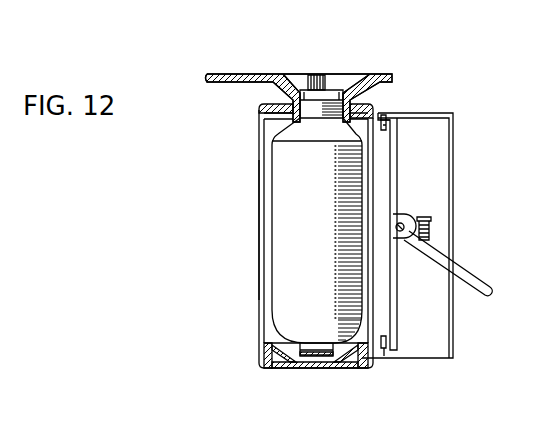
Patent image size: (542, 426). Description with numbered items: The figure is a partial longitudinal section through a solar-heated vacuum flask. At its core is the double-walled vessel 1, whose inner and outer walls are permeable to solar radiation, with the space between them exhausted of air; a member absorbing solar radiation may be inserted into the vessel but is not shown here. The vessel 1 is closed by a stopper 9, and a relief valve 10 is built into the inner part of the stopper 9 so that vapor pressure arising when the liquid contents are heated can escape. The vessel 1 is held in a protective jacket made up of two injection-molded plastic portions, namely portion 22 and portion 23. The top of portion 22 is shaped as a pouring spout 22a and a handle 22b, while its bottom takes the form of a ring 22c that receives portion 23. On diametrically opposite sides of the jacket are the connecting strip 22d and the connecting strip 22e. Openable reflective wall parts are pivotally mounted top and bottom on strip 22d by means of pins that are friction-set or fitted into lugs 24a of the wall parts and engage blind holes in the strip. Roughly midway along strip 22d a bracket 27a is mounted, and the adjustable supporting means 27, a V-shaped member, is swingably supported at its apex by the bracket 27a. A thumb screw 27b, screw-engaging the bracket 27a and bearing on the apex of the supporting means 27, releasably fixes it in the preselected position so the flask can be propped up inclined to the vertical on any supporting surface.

The double-walled vessel 1 is at (283, 212).
The stopper 9 is at (334, 90).
The relief valve 10 is at (312, 76).
The protective jacket portion 22 is at (262, 110).
The pouring spout 22a is at (360, 84).
The handle 22b is at (235, 75).
The ring 22c is at (280, 342).
The connecting strip 22d is at (385, 173).
The connecting strip 22e is at (262, 176).
The protective jacket portion 23 is at (283, 370).
The lugs 24a is at (386, 113).
The supporting means 27 is at (467, 275).
The bracket 27a is at (404, 242).
The thumb screw 27b is at (427, 228).